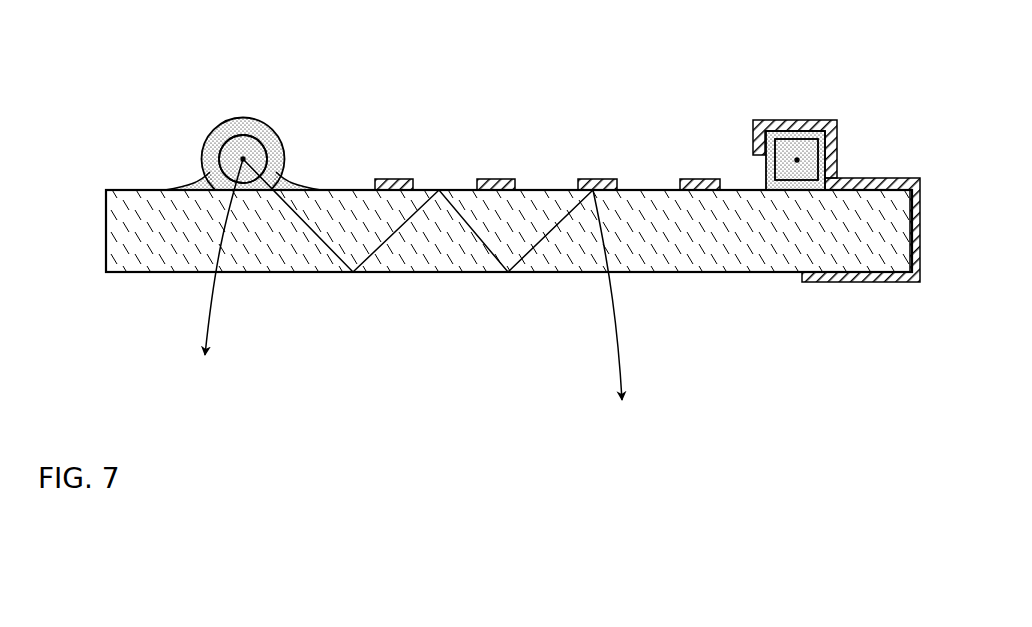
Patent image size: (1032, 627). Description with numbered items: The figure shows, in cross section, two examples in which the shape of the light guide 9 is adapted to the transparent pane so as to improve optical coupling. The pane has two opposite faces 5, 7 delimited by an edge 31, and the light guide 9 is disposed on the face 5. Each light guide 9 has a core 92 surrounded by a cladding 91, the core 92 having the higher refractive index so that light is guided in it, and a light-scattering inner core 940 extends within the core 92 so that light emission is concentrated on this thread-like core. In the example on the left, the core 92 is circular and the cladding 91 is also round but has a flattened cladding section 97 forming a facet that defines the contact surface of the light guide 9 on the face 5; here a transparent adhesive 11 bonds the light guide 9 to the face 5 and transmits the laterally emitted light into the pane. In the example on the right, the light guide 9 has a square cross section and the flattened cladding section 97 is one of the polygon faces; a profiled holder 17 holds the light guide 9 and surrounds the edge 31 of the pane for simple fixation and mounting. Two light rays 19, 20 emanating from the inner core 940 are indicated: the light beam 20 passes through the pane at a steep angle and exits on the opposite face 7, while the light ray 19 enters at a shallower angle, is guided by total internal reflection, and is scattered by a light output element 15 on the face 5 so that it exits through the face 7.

The face 5 is at (542, 190).
The opposite face 7 is at (650, 272).
The light guide 9 is at (463, 101).
The transparent adhesive 11 is at (180, 188).
The light output elements 15 is at (396, 178).
The profiled holder 17 is at (860, 178).
The light ray 19 is at (617, 352).
The light beam 20 is at (205, 322).
The edge 31 is at (106, 232).
The cladding 91 is at (236, 135).
The core 92 is at (262, 145).
The flattened cladding section 97 is at (246, 190).
The inner core 940 is at (243, 159).